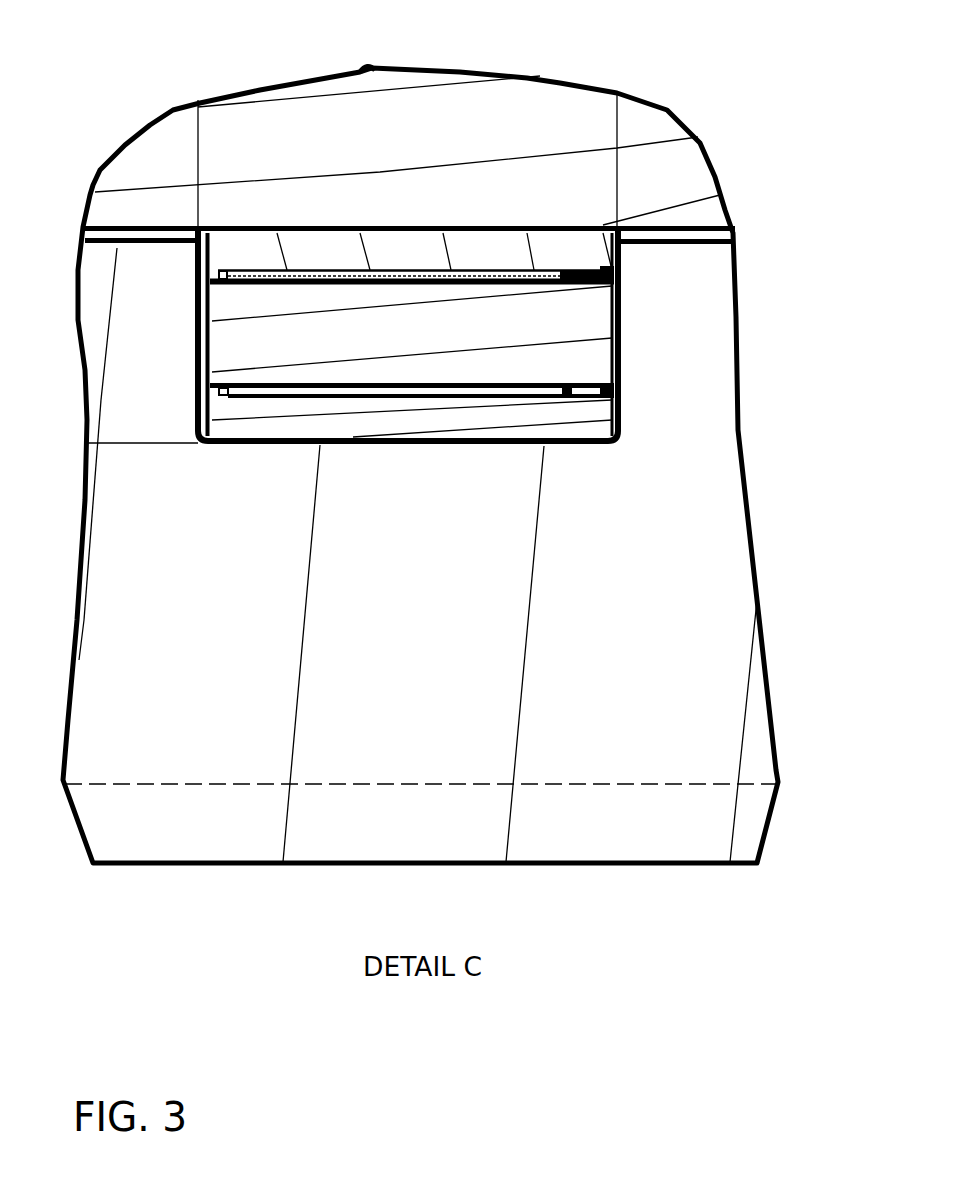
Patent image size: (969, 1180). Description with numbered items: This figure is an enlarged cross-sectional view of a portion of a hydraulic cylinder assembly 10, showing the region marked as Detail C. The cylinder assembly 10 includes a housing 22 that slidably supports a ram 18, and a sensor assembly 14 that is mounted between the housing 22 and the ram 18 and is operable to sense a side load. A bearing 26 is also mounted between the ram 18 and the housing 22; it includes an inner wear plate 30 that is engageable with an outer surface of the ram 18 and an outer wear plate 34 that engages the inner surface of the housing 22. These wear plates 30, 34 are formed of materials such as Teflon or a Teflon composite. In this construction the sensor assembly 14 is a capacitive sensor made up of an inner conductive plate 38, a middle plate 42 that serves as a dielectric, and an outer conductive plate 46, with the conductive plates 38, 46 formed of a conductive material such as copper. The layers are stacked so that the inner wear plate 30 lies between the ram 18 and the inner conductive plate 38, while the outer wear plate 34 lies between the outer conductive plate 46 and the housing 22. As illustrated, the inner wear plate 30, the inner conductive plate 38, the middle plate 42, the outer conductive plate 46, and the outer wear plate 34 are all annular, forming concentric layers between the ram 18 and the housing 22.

The hydraulic cylinder assembly 10 is at (767, 581).
The sensor assembly 14 is at (180, 405).
The ram 18 is at (638, 158).
The housing 22 is at (654, 480).
The bearing 26 is at (253, 245).
The inner wear plate 30 is at (565, 252).
The outer wear plate 34 is at (565, 420).
The inner conductive plate 38 is at (600, 273).
The middle plate 42 is at (565, 330).
The outer conductive plate 46 is at (607, 387).